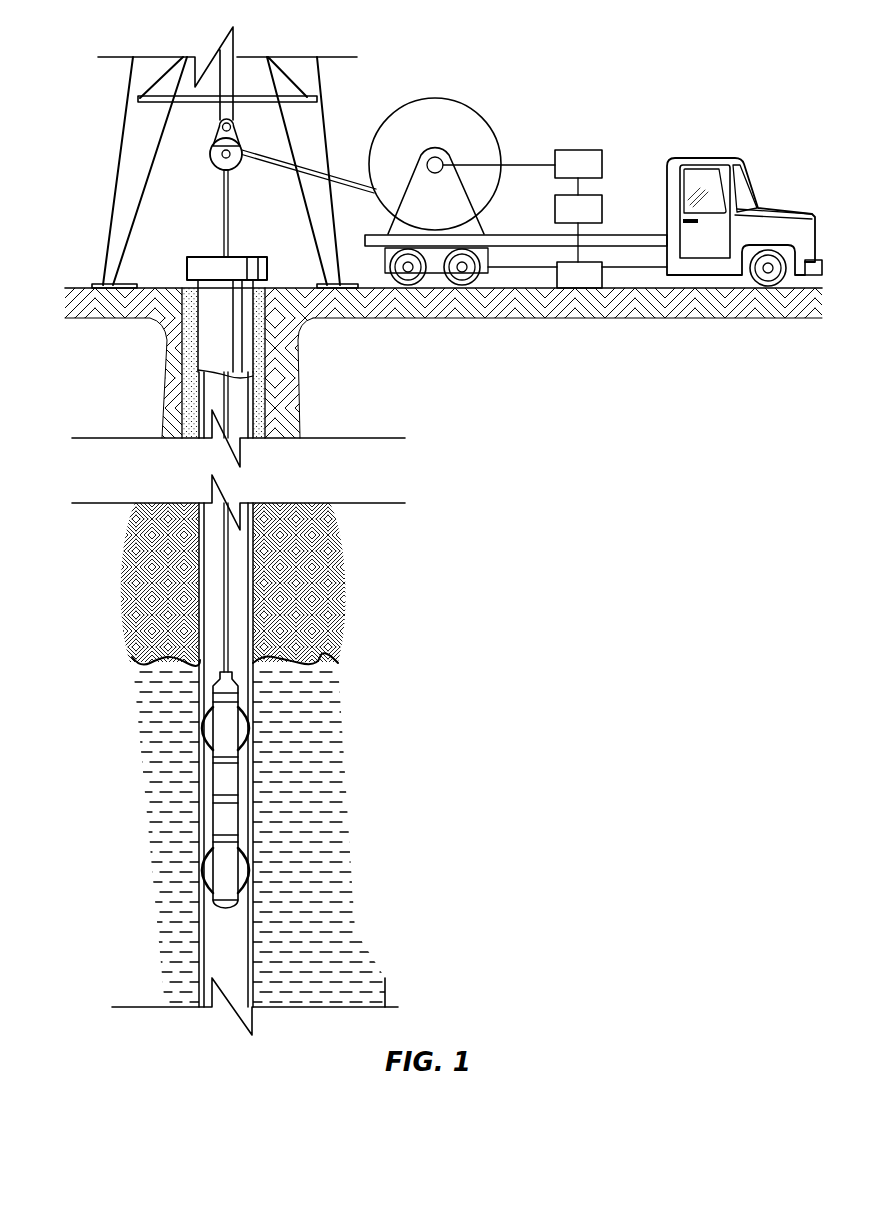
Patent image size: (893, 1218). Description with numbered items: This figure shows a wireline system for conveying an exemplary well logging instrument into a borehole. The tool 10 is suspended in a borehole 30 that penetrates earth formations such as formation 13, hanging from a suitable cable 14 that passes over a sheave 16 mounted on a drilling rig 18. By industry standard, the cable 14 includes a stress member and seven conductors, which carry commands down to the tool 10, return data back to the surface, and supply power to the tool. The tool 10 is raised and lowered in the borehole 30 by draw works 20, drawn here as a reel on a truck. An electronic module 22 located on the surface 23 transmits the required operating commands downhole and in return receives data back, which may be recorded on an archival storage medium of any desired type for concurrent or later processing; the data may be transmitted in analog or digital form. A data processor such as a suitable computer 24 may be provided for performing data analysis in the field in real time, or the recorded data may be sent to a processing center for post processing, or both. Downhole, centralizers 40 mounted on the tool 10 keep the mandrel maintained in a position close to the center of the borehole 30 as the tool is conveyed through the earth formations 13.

The tool 10 is at (243, 779).
The earth formations 13 is at (377, 618).
The cable 14 is at (223, 232).
The sheave 16 is at (210, 154).
The drilling rig 18 is at (125, 105).
The draw works 20 is at (435, 98).
The electronic module 22 is at (590, 150).
The surface 23 is at (82, 286).
The computer 24 is at (590, 195).
The borehole 30 is at (245, 575).
The centralizers 40 is at (249, 728).